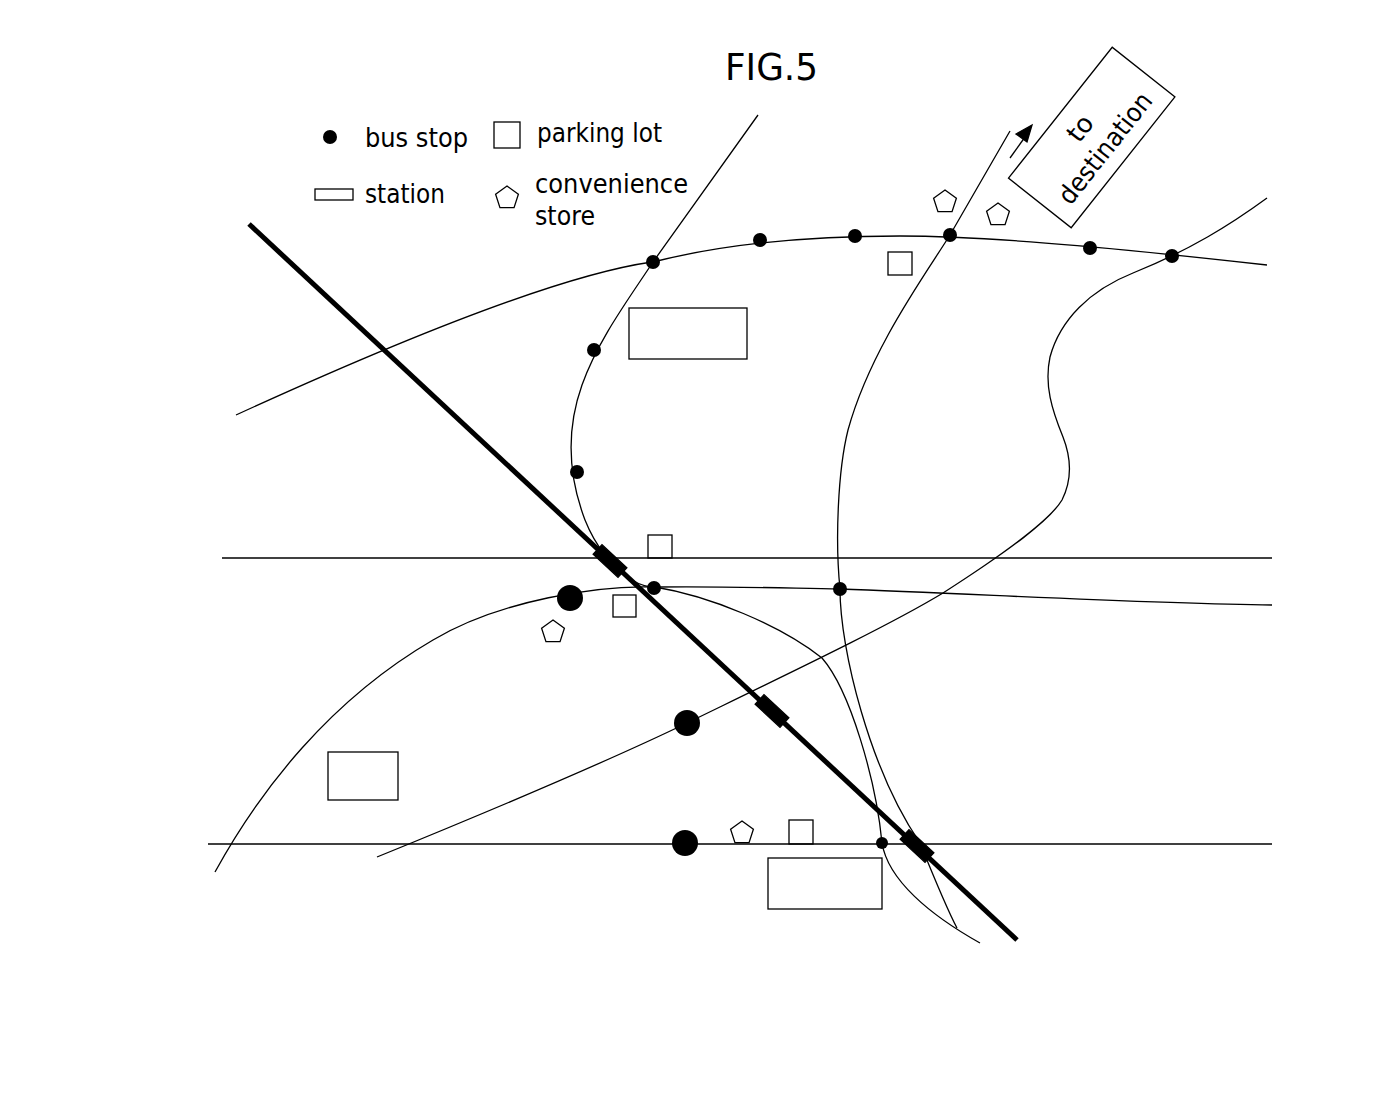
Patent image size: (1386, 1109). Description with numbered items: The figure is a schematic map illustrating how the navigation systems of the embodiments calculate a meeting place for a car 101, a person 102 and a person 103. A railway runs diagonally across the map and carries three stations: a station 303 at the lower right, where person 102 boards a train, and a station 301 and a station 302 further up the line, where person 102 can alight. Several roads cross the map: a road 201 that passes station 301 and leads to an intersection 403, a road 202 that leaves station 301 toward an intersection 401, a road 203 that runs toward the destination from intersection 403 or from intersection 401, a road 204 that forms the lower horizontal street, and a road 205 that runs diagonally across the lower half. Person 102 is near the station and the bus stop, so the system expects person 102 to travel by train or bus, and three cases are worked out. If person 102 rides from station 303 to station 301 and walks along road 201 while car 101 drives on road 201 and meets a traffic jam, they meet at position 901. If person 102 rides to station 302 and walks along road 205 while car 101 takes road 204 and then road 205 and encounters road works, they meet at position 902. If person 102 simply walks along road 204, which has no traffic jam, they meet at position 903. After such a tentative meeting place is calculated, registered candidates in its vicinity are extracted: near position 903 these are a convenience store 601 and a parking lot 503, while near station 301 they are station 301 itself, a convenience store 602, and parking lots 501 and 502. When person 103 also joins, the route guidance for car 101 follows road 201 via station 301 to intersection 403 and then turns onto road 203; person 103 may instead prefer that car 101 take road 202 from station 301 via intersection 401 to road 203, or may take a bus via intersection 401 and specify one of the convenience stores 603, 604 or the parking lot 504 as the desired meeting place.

The car 101 is at (367, 752).
The person 102 is at (768, 885).
The person 103 is at (643, 359).
The road 201 is at (338, 713).
The road 202 is at (572, 427).
The road 203 is at (838, 470).
The road 204 is at (448, 845).
The road 205 is at (1067, 490).
The station 301 is at (593, 556).
The station 302 is at (760, 717).
The station 303 is at (918, 845).
The intersection 401 is at (662, 265).
The intersection 403 is at (843, 583).
The parking lot 501 is at (625, 617).
The parking lot 502 is at (660, 535).
The parking lot 503 is at (803, 820).
The parking lot 504 is at (888, 267).
The convenience store 601 is at (742, 821).
The convenience store 602 is at (552, 645).
The convenience store 603 is at (948, 190).
The convenience store 604 is at (1008, 217).
The position 901 is at (577, 612).
The position 902 is at (676, 713).
The position 903 is at (680, 857).